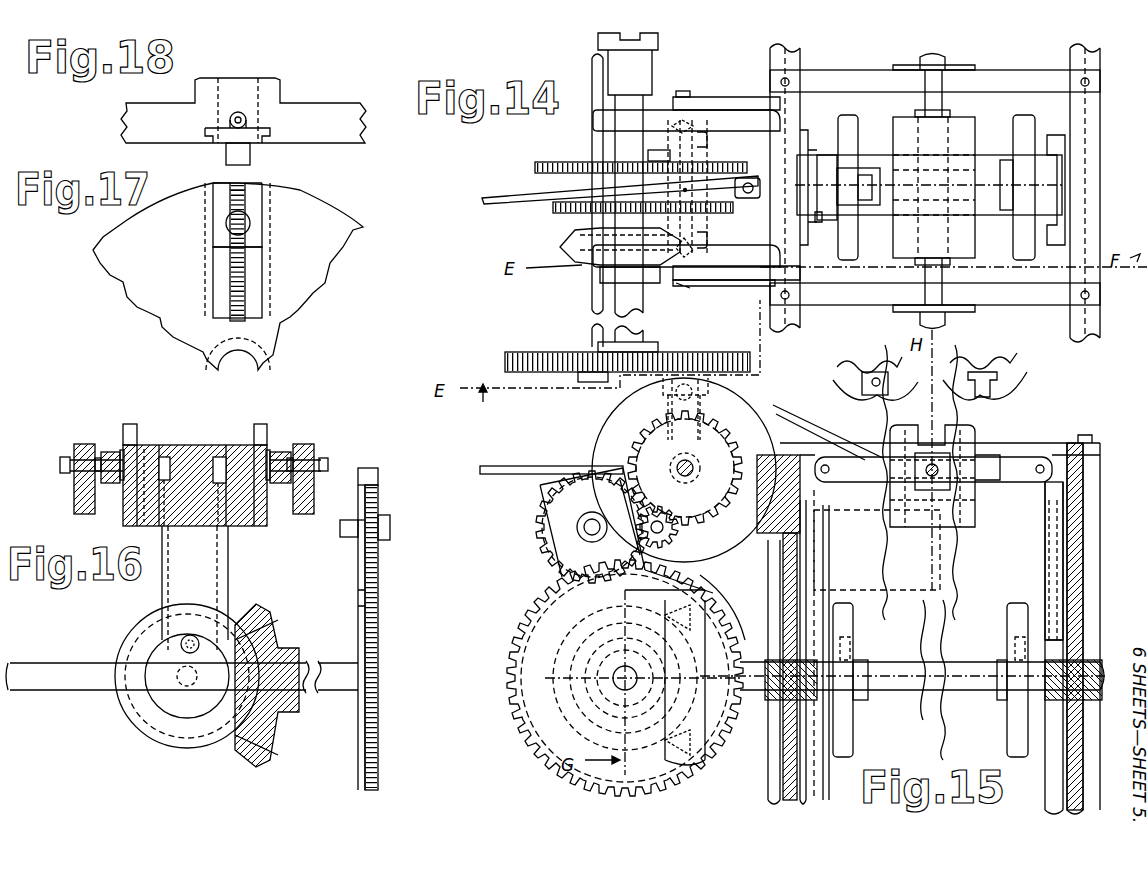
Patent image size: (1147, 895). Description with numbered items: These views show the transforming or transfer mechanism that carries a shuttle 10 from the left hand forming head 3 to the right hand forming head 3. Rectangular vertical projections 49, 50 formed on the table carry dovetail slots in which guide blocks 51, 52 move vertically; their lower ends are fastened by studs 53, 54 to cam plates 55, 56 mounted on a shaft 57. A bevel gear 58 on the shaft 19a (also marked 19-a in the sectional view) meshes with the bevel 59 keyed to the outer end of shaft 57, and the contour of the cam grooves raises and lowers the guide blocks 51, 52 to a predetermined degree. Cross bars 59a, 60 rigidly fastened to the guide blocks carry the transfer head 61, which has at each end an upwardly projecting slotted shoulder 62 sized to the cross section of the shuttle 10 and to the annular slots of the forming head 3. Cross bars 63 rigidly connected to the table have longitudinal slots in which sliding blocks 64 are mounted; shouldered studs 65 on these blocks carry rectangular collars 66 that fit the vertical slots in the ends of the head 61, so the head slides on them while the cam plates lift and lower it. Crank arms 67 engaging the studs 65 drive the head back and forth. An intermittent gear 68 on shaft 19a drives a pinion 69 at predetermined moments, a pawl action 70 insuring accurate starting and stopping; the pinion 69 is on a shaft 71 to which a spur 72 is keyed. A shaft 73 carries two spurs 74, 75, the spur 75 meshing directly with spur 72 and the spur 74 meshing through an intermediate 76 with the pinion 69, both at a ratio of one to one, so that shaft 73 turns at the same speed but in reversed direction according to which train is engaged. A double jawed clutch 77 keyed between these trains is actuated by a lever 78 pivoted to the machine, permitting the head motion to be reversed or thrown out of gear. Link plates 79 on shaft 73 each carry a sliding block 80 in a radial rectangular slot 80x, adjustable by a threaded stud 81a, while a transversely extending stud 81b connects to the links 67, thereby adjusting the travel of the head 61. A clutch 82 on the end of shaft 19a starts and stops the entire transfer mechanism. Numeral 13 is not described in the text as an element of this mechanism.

In FIG. 15, the forming head 3 is at (842, 368).
In FIG. 15, the shuttle 10 is at (872, 396).
In FIG. 14, the lug 13 is at (686, 94).
In FIG. 14, the shaft 19a is at (640, 310).
In FIG. 15, the shaft 19a is at (612, 668).
In FIG. 16, the shaft 19-a is at (28, 664).
In FIG. 14, the rectangular vertical projection 49 is at (1060, 142).
In FIG. 15, the rectangular vertical projection 49 is at (1050, 540).
In FIG. 14, the rectangular vertical projection 50 is at (822, 148).
In FIG. 15, the rectangular vertical projection 50 is at (785, 575).
In FIG. 16, the guide block 51 is at (228, 567).
In FIG. 14, the guide block 51 is at (1050, 175).
In FIG. 15, the guide block 51 is at (1036, 566).
In FIG. 14, the guide block 52 is at (820, 218).
In FIG. 15, the guide block 52 is at (834, 551).
In FIG. 16, the stud 53 is at (181, 646).
In FIG. 15, the stud 53 is at (1000, 650).
In FIG. 15, the stud 54 is at (862, 658).
In FIG. 14, the cam plate 55 is at (1026, 120).
In FIG. 15, the cam plate 55 is at (1008, 612).
In FIG. 14, the cam plate 56 is at (856, 142).
In FIG. 15, the cam plate 56 is at (855, 614).
In FIG. 15, the shaft 57 is at (948, 690).
In FIG. 16, the bevel gear 58 is at (270, 622).
In FIG. 14, the bevel gear 58 is at (558, 243).
In FIG. 15, the bevel 59 is at (706, 634).
In FIG. 16, the cross bar 59a is at (170, 457).
In FIG. 14, the cross bar 59a is at (1003, 158).
In FIG. 16, the cross bar 60 is at (210, 457).
In FIG. 14, the cross bar 60 is at (976, 240).
In FIG. 15, the cross bar 60 is at (1020, 462).
In FIG. 16, the transfer head 61 is at (236, 445).
In FIG. 14, the transfer head 61 is at (893, 238).
In FIG. 15, the transfer head 61 is at (903, 528).
In FIG. 16, the shoulder 62 is at (130, 424).
In FIG. 14, the shoulder 62 is at (912, 130).
In FIG. 15, the shoulder 62 is at (962, 433).
In FIG. 16, the cross bar 63 is at (76, 446).
In FIG. 14, the cross bar 63 is at (848, 72).
In FIG. 15, the cross bar 63 is at (858, 484).
In FIG. 16, the sliding block 64 is at (68, 457).
In FIG. 14, the sliding block 64 is at (906, 62).
In FIG. 16, the shouldered stud 65 is at (328, 464).
In FIG. 16, the rectangular collar 66 is at (121, 448).
In FIG. 16, the crank arm 67 is at (106, 452).
In FIG. 14, the crank arm 67 is at (726, 97).
In FIG. 15, the crank arm 67 is at (800, 415).
In FIG. 16, the intermittent gear 68 is at (380, 631).
In FIG. 14, the intermittent gear 68 is at (508, 362).
In FIG. 15, the intermittent gear 68 is at (522, 618).
In FIG. 16, the pinion 69 is at (382, 506).
In FIG. 14, the pinion 69 is at (582, 350).
In FIG. 15, the pinion 69 is at (536, 527).
In FIG. 15, the pawl action 70 is at (538, 490).
In FIG. 16, the shaft 71 is at (348, 531).
In FIG. 14, the shaft 71 is at (590, 283).
In FIG. 15, the shaft 71 is at (592, 535).
In FIG. 14, the spur 72 is at (540, 160).
In FIG. 15, the spur 72 is at (540, 557).
In FIG. 14, the shaft 73 is at (680, 286).
In FIG. 15, the shaft 73 is at (690, 478).
In FIG. 14, the spur 74 is at (704, 214).
In FIG. 15, the spur 74 is at (680, 525).
In FIG. 14, the spur 75 is at (657, 150).
In FIG. 15, the spur 75 is at (648, 446).
In FIG. 15, the intermediate 76 is at (690, 565).
In FIG. 14, the double jawed clutch 77 is at (696, 180).
In FIG. 14, the lever 78 is at (490, 200).
In FIG. 15, the lever 78 is at (528, 466).
In FIG. 18, the link plate 79 is at (350, 108).
In FIG. 17, the link plate 79 is at (288, 317).
In FIG. 14, the link plate 79 is at (596, 112).
In FIG. 15, the link plate 79 is at (598, 447).
In FIG. 17, the sliding block 80 is at (262, 217).
In FIG. 17, the radial rectangular slot 80x is at (252, 274).
In FIG. 18, the threaded stud 81a is at (263, 120).
In FIG. 17, the threaded stud 81a is at (245, 192).
In FIG. 18, the transversely extending stud 81b is at (226, 157).
In FIG. 17, the transversely extending stud 81b is at (226, 223).
In FIG. 14, the clutch 82 is at (598, 40).